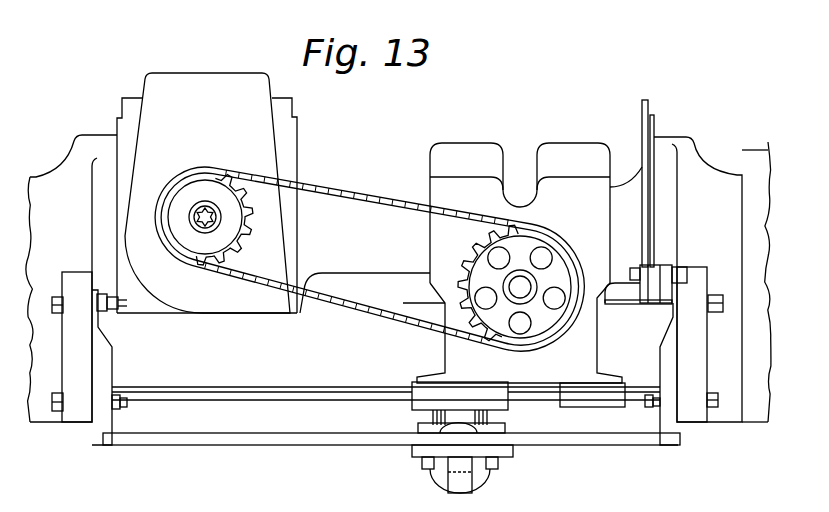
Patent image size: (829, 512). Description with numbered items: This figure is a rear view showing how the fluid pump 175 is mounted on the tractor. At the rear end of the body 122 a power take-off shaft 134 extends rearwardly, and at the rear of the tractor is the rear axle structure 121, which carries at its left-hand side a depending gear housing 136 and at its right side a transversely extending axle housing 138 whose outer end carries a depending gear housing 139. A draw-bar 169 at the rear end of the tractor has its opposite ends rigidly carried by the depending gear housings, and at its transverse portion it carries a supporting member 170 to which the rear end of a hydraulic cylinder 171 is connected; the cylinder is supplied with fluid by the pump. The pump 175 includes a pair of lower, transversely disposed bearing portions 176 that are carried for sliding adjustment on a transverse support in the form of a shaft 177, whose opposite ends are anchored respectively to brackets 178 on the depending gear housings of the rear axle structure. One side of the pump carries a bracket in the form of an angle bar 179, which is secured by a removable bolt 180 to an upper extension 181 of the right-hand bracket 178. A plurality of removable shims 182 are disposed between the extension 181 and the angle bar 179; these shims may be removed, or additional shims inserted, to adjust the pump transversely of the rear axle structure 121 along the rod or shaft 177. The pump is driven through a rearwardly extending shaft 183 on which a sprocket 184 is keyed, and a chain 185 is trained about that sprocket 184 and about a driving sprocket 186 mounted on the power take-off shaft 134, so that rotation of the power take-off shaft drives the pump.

The rear axle structure 121 is at (348, 181).
The body 122 is at (203, 74).
The power take-off shaft 134 is at (203, 206).
The depending gear housing 136 is at (80, 150).
The axle housing 138 is at (404, 186).
The depending gear housing 139 is at (695, 152).
The draw-bar 169 is at (308, 440).
The supporting member 170 is at (410, 450).
The hydraulic cylinder 171 is at (487, 478).
The fluid pump 175 is at (577, 150).
The bearing portions 176 is at (547, 390).
The shaft 177 is at (312, 390).
The brackets 178 is at (112, 358).
The angle bar 179 is at (622, 305).
The removable bolt 180 is at (688, 268).
The upper extension 181 is at (688, 262).
The removable shims 182 is at (670, 265).
The rearwardly extending shaft 183 is at (522, 280).
The sprocket 184 is at (458, 263).
The chain 185 is at (378, 205).
The driving sprocket 186 is at (218, 250).